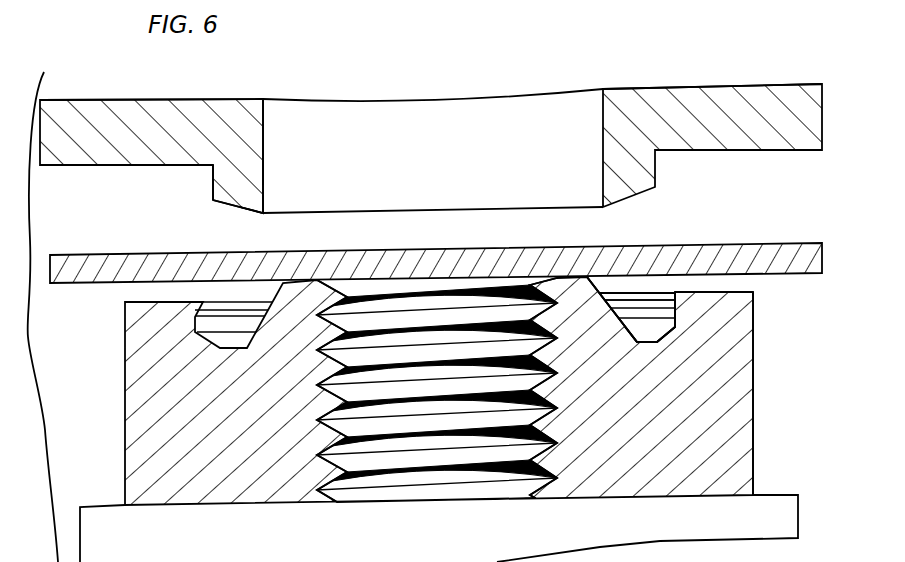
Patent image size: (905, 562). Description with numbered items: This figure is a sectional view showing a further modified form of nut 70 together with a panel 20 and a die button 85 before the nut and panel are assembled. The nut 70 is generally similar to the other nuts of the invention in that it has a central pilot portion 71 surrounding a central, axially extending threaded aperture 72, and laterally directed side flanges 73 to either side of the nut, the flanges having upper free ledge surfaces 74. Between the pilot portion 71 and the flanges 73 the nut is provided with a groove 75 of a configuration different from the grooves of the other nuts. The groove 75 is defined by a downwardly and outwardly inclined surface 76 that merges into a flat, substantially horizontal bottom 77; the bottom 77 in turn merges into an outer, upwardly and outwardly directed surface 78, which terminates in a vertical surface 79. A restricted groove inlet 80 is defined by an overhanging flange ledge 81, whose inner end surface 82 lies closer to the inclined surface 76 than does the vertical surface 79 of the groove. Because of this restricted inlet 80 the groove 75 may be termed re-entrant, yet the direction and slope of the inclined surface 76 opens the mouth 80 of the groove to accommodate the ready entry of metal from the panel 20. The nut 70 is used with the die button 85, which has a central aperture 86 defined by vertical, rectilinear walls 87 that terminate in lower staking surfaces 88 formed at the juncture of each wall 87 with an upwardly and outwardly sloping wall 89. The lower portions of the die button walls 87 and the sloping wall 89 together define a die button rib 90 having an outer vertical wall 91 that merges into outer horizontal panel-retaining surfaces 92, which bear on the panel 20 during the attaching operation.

The panel 20 is at (804, 243).
The nut 70 is at (760, 367).
The central pilot portion 71 is at (555, 280).
The threaded aperture 72 is at (540, 320).
The side flanges 73 is at (754, 426).
The upper free ledge surfaces 74 is at (725, 288).
The groove 75 is at (641, 350).
The inclined surface 76 is at (592, 278).
The bottom 77 is at (630, 342).
The outer surface 78 is at (665, 327).
The vertical surface 79 is at (674, 312).
The groove inlet 80 is at (623, 294).
The overhanging flange ledge 81 is at (676, 293).
The inner end surface 82 is at (653, 293).
The die button 85 is at (622, 86).
The central aperture 86 is at (393, 114).
The walls 87 is at (263, 112).
The staking surfaces 88 is at (265, 212).
The sloping wall 89 is at (230, 207).
The die button rib 90 is at (248, 167).
The outer vertical wall 91 is at (212, 183).
The panel-retaining surfaces 92 is at (88, 164).